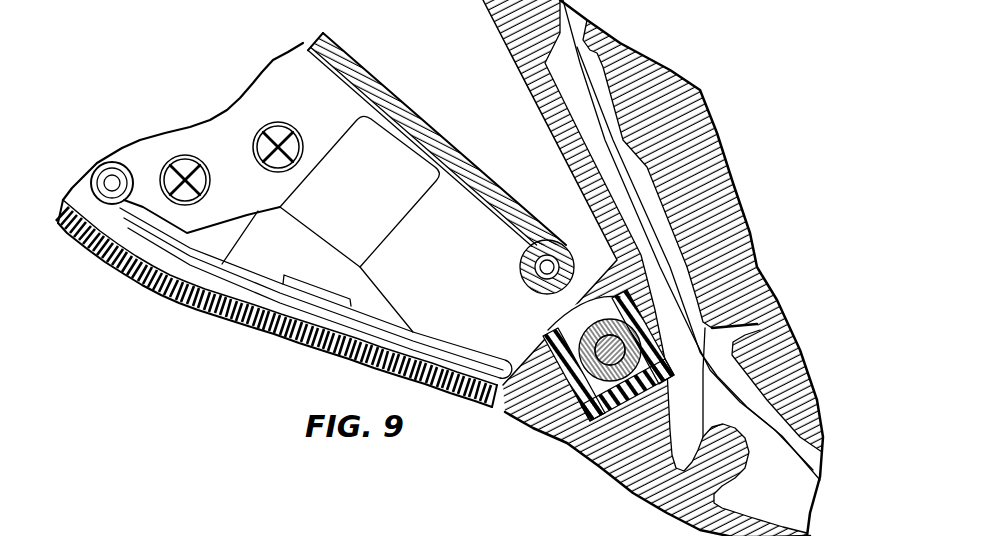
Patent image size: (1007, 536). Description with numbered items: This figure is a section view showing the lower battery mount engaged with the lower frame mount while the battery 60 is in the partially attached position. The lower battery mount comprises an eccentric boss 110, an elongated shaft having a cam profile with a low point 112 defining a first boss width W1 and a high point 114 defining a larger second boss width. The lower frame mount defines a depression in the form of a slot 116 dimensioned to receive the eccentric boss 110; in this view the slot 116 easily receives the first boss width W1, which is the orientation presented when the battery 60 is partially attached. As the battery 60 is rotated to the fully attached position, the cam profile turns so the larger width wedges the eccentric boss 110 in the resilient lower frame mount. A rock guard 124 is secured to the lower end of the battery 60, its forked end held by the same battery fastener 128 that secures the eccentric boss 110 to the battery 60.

The battery 60 is at (350, 60).
The rock guard 124 is at (193, 300).
The battery fastener 128 is at (563, 335).
The high point 114 is at (598, 270).
The first boss width W1 is at (650, 303).
The low point 112 is at (565, 360).
The slot 116 is at (596, 392).
The eccentric boss 110 is at (612, 365).